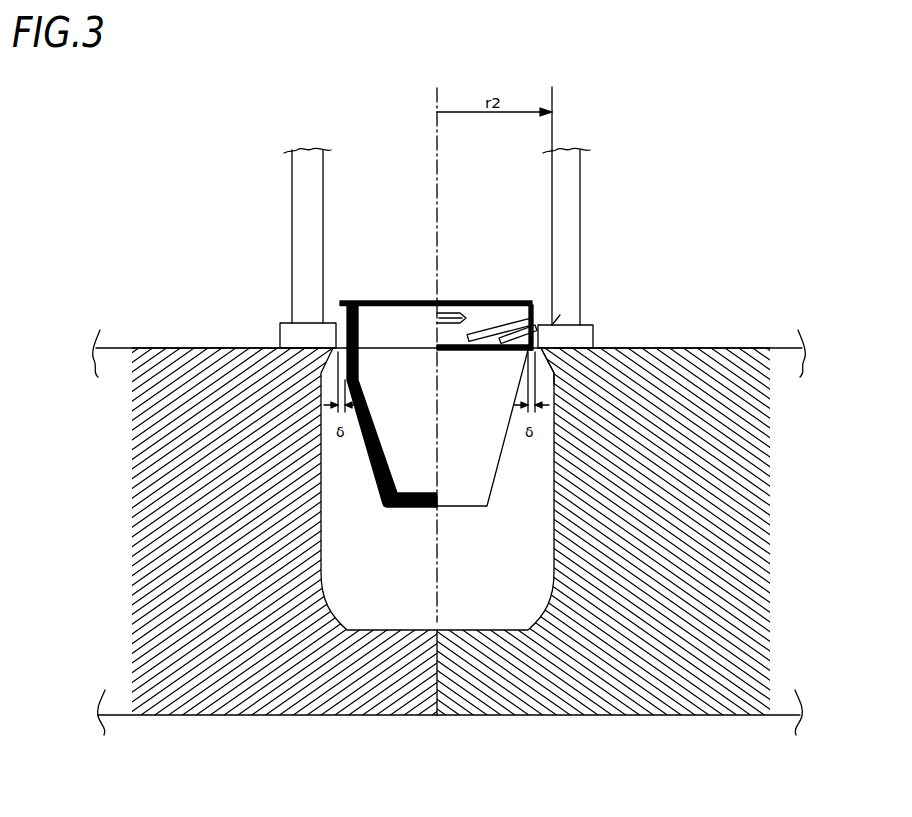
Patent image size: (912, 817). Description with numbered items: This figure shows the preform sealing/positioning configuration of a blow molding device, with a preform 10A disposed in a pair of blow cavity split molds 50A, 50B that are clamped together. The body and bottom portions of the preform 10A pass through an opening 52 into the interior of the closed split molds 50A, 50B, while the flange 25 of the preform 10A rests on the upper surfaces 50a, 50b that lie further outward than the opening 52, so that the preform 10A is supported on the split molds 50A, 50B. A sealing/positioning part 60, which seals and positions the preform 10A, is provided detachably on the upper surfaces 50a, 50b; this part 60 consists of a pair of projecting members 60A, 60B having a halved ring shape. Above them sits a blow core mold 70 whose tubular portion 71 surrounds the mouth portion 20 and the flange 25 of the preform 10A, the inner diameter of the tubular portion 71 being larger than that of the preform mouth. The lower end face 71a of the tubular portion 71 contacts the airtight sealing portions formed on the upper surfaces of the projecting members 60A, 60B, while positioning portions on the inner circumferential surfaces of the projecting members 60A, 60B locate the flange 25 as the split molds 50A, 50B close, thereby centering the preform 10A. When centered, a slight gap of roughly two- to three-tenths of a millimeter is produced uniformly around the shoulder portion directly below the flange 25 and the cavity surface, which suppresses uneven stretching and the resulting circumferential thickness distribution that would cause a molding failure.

The preform 10A is at (503, 459).
The mouth portion 20 is at (468, 301).
The flange 25 is at (505, 332).
The blow cavity split mold 50A is at (270, 716).
The blow cavity split mold 50B is at (622, 716).
The upper surface 50a is at (171, 348).
The upper surface 50b is at (713, 348).
The opening 52 is at (557, 380).
The sealing/positioning part 60 is at (504, 300).
The projecting member 60A is at (280, 323).
The projecting member 60B is at (593, 325).
The blow core mold 70 is at (485, 236).
The tubular portion 71 is at (581, 177).
The lower end face 71a is at (566, 325).